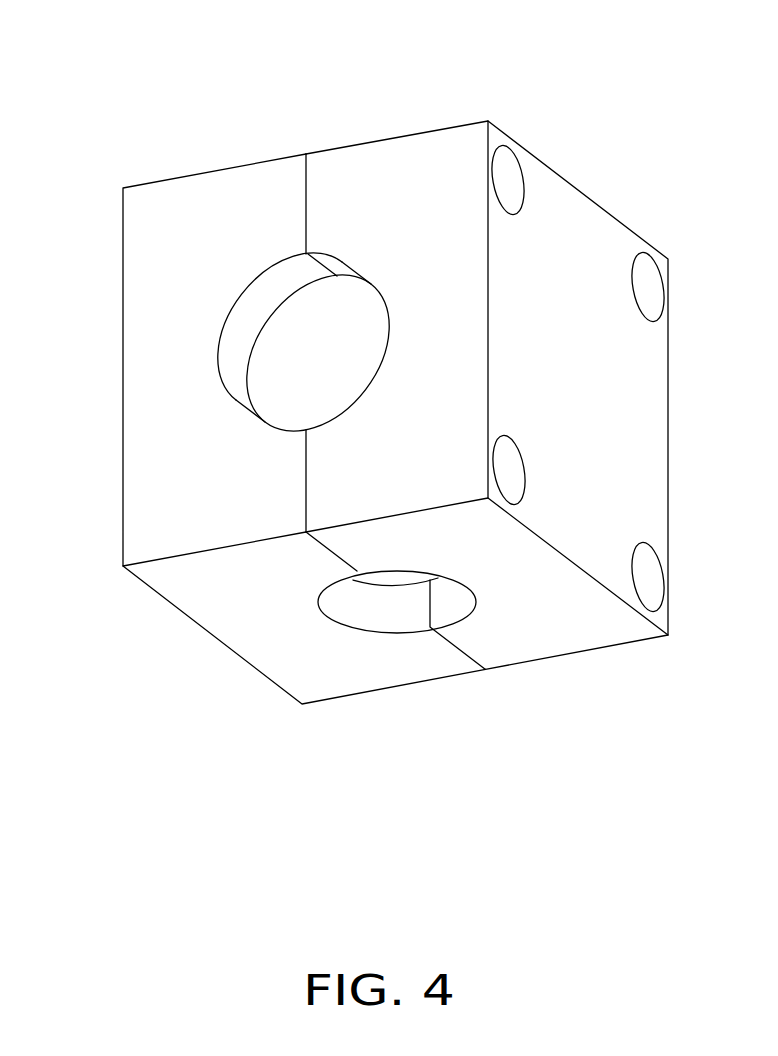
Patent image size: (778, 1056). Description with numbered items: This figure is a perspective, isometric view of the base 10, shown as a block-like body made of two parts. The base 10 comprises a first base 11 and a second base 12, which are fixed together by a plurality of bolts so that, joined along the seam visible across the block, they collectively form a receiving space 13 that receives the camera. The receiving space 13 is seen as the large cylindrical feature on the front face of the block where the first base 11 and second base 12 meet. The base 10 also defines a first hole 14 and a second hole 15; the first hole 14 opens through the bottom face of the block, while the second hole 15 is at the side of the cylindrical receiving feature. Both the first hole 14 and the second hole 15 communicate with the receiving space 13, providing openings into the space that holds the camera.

The base 10 is at (287, 52).
The first base 11 is at (173, 175).
The second base 12 is at (418, 130).
The receiving space 13 is at (310, 347).
The first hole 14 is at (375, 602).
The second hole 15 is at (235, 365).